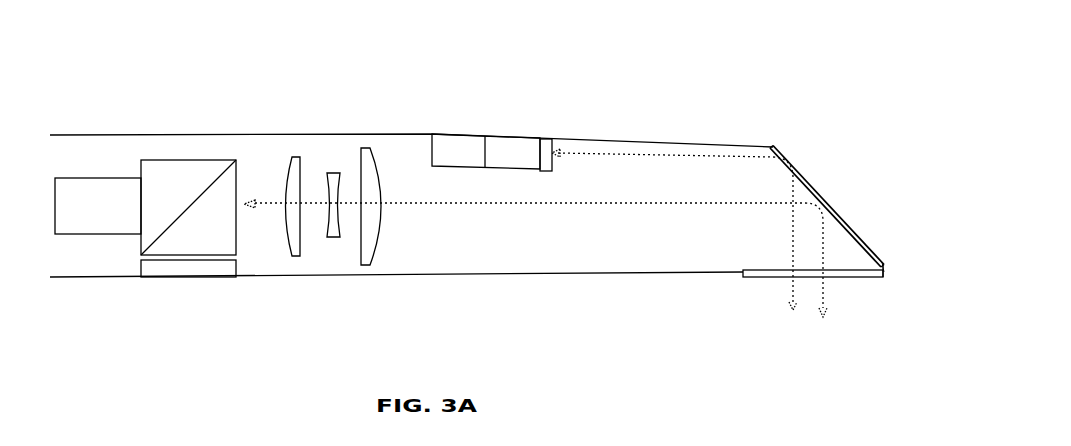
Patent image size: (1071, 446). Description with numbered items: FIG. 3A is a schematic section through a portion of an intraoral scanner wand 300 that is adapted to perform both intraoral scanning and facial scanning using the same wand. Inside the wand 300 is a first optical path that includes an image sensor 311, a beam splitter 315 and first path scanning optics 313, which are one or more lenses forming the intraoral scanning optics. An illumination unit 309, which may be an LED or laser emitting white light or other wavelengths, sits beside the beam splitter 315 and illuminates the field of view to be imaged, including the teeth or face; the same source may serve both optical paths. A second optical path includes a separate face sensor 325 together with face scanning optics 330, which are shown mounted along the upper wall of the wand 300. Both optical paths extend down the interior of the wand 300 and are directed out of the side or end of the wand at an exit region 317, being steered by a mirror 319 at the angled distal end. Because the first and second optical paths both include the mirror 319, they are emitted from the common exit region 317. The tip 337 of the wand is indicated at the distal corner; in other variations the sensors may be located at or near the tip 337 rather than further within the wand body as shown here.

The wand 300 is at (729, 84).
The illumination unit 309 is at (68, 224).
The image sensor 311 is at (188, 270).
The first path scanning optics 313 is at (396, 128).
The beam splitter 315 is at (165, 170).
The exit region 317 is at (758, 279).
The mirror 319 is at (803, 177).
The face sensor 325 is at (465, 148).
The face scanning optics 330 is at (520, 152).
The tip 337 is at (881, 288).